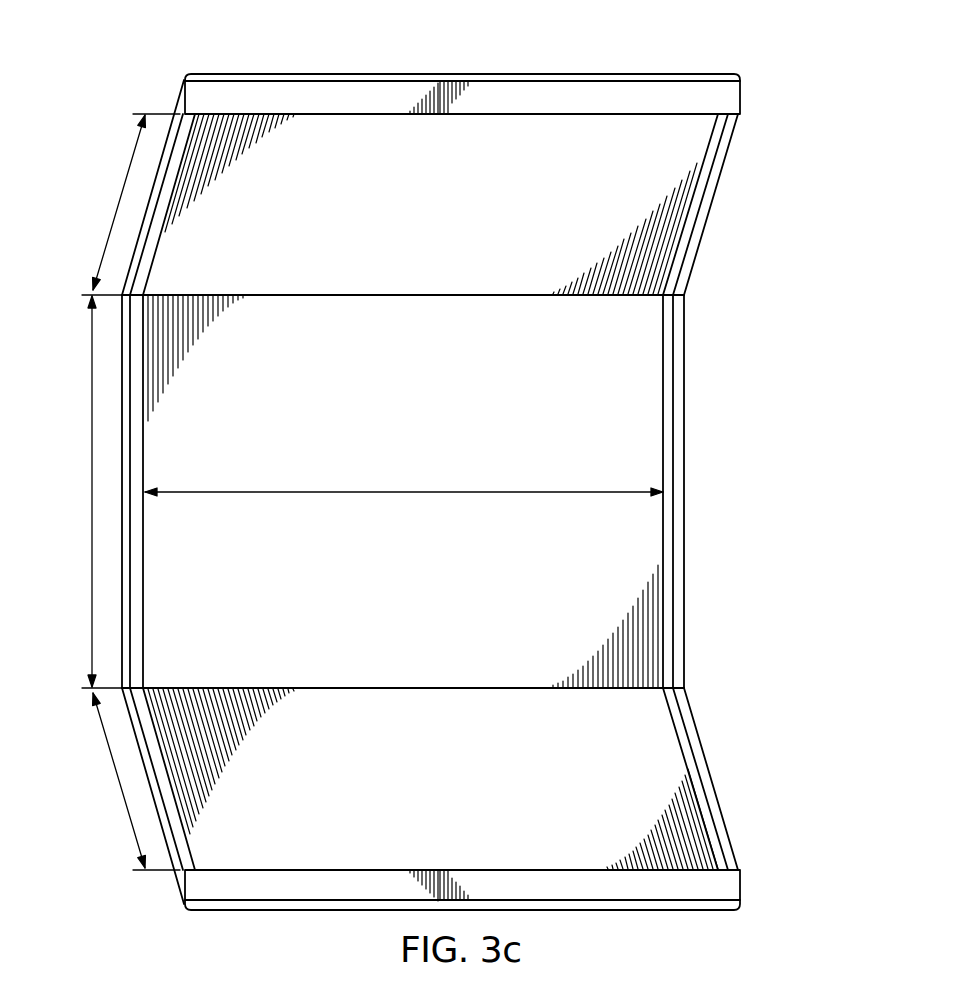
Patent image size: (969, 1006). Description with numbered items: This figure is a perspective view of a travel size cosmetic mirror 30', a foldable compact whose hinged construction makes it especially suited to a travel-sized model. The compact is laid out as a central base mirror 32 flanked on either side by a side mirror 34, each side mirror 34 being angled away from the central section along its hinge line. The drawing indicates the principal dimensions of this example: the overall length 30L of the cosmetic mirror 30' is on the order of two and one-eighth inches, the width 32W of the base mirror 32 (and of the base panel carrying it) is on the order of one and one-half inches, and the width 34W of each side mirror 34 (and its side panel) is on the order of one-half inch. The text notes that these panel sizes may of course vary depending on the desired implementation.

The travel size cosmetic mirror 30' is at (424, 463).
The base mirror 32 is at (645, 438).
The side mirror 34 is at (530, 127).
The width of side panel and side mirror 34W is at (116, 215).
The width of base mirror and base panel 32W is at (92, 493).
The length of cosmetic mirror 30L is at (405, 490).